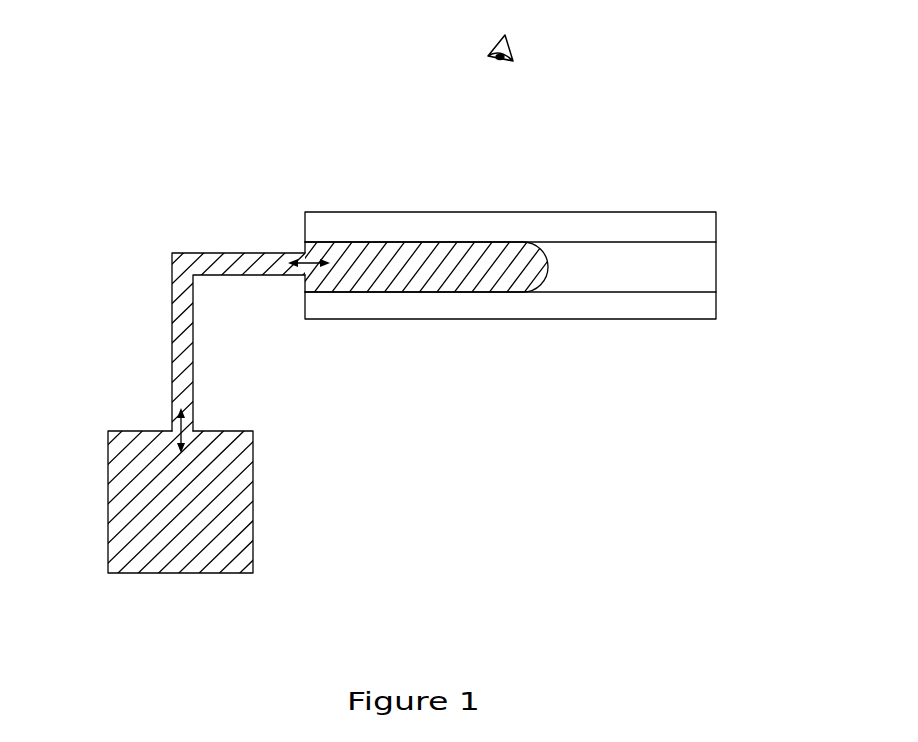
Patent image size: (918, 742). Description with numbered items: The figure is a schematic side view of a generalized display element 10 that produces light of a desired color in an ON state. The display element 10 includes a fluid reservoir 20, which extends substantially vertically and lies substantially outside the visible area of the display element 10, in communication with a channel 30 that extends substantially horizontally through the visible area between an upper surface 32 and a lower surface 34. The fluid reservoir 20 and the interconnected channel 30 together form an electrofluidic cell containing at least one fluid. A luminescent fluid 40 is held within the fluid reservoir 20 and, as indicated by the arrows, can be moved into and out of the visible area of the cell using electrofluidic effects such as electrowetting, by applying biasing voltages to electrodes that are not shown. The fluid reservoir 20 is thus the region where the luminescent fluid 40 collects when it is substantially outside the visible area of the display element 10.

The display element 10 is at (131, 169).
The fluid reservoir 20 is at (236, 523).
The channel 30 is at (520, 290).
The upper surface 32 is at (678, 242).
The lower surface 34 is at (680, 292).
The luminescent fluid 40 is at (123, 470).